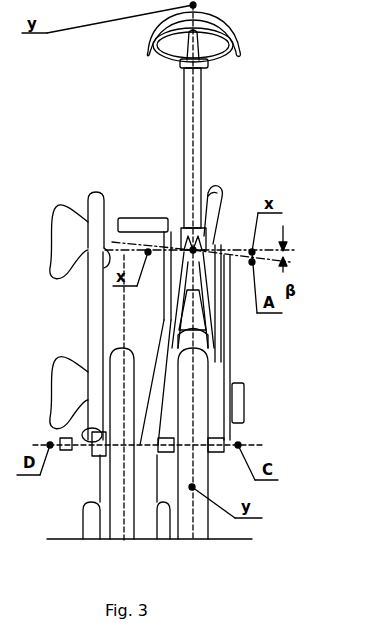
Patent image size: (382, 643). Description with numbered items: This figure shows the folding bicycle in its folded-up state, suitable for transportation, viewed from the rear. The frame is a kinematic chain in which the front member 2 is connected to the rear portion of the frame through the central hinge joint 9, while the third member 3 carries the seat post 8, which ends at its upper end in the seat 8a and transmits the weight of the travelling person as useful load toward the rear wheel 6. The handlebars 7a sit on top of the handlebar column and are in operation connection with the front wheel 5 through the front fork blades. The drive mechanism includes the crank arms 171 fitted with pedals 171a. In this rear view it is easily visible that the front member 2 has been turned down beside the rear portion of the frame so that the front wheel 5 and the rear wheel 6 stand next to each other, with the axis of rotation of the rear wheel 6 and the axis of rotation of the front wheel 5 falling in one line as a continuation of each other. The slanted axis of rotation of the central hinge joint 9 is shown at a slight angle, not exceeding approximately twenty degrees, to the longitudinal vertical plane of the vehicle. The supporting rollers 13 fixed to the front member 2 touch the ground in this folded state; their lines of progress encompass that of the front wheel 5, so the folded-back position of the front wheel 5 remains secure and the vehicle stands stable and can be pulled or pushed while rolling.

The seat 8a is at (148, 50).
The seat post 8 is at (185, 193).
The central hinge joint 9 is at (199, 241).
The third member 3 is at (210, 318).
The crank arms 171 is at (293, 388).
The pedals 171a is at (288, 437).
The handlebars 7a is at (89, 227).
The front member 2 is at (153, 338).
The front wheel 5 is at (123, 539).
The rear wheel 6 is at (198, 540).
The supporting rollers 13 is at (91, 539).